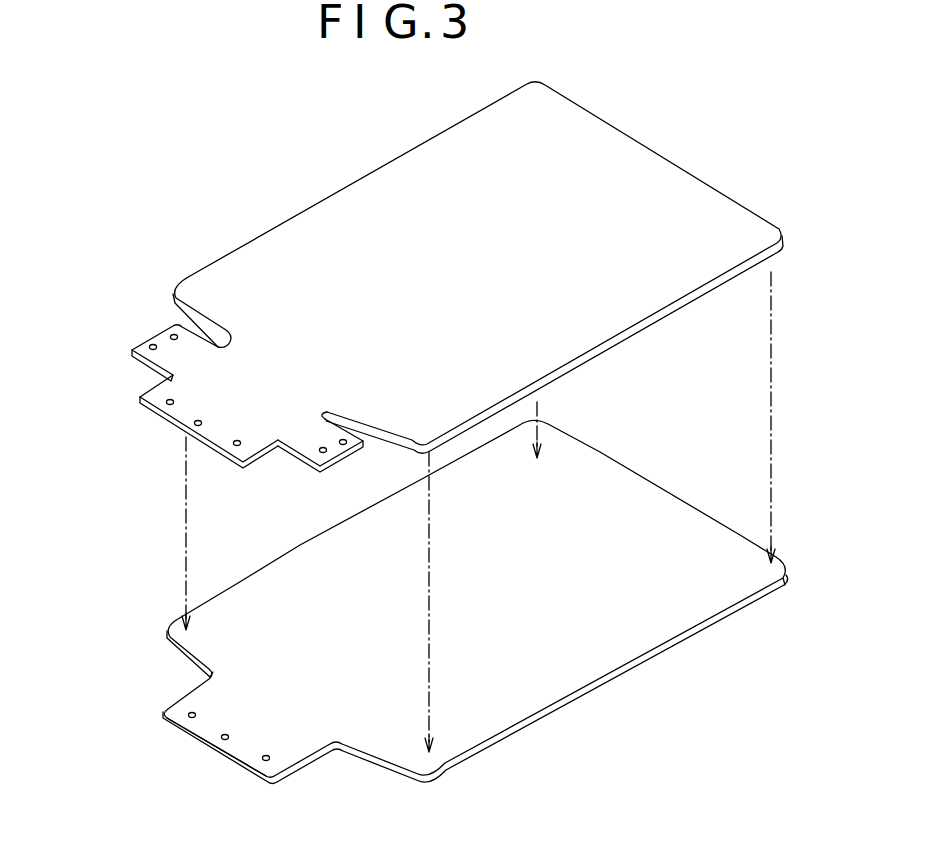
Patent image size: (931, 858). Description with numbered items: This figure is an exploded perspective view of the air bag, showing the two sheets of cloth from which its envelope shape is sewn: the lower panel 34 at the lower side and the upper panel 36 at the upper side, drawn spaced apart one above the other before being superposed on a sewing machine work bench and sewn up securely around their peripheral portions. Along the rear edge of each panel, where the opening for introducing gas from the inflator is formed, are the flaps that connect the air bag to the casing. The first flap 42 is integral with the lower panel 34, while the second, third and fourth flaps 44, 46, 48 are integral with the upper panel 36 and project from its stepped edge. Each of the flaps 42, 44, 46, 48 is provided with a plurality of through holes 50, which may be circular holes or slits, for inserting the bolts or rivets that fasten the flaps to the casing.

The lower panel 34 is at (612, 657).
The upper panel 36 is at (350, 208).
The first flap 42 is at (247, 750).
The second flap 44 is at (157, 335).
The third flap 46 is at (185, 408).
The fourth flap 48 is at (338, 448).
The through holes 50 is at (155, 352).